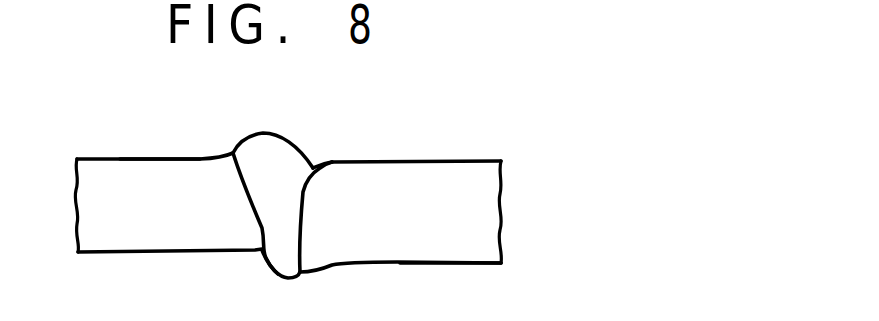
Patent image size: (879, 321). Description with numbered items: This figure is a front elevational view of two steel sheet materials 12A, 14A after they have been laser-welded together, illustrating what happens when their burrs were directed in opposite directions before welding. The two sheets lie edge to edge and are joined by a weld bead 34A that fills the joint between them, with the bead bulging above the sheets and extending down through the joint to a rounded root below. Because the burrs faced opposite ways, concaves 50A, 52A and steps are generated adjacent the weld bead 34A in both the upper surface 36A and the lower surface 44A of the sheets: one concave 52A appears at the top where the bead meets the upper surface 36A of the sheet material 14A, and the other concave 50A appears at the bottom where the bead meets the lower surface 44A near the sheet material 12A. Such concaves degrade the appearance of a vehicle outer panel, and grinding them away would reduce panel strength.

The steel sheet material 12A is at (101, 170).
The upper surface 36A is at (130, 160).
The weld bead 34A is at (278, 167).
The concave 50A is at (263, 252).
The concave 52A is at (317, 168).
The steel sheet material 14A is at (465, 178).
The lower surface 44A is at (433, 264).